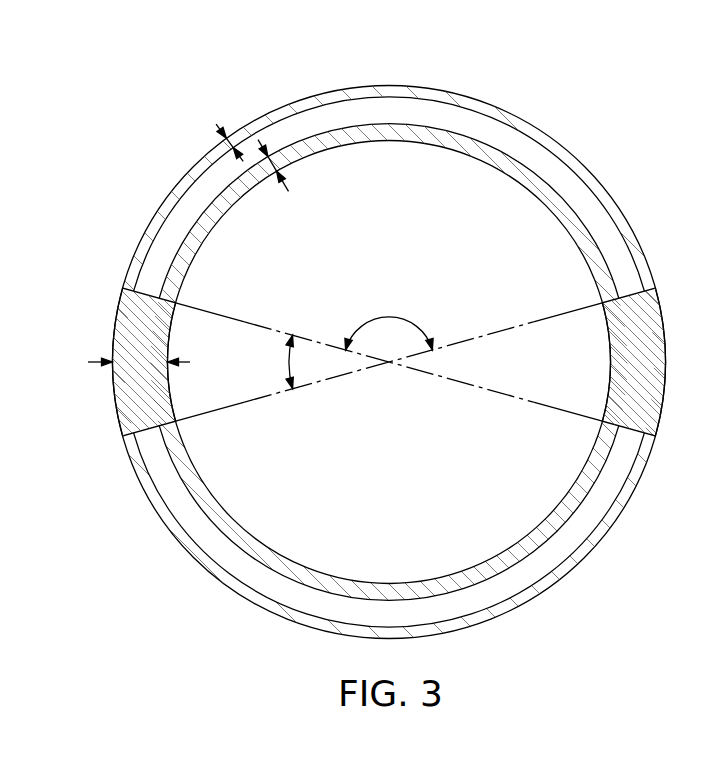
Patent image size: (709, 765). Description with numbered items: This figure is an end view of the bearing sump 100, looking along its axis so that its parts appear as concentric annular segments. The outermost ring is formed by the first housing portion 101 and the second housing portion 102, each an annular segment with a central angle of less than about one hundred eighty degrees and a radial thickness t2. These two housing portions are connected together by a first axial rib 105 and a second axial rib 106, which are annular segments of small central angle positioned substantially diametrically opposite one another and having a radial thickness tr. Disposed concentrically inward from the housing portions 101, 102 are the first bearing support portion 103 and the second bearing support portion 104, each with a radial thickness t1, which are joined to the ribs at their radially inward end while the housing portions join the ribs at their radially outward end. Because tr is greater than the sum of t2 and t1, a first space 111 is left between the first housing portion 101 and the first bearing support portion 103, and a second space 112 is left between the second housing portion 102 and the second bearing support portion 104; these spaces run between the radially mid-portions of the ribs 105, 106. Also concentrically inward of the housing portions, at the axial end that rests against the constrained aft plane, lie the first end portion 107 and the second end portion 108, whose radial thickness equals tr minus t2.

The bearing sump 100 is at (389, 339).
The first housing portion 101 is at (381, 87).
The second housing portion 102 is at (277, 612).
The first bearing support portion 103 is at (508, 171).
The second bearing support portion 104 is at (213, 508).
The first axial rib 105 is at (160, 398).
The second axial rib 106 is at (611, 362).
The first end portion 107 is at (478, 126).
The second end portion 108 is at (213, 546).
The first space 111 is at (318, 76).
The second space 112 is at (535, 626).
The radial thickness of the bearing support portions t1 is at (290, 188).
The radial thickness of the housing portions t2 is at (217, 124).
The radial thickness of the axial ribs tr is at (186, 362).